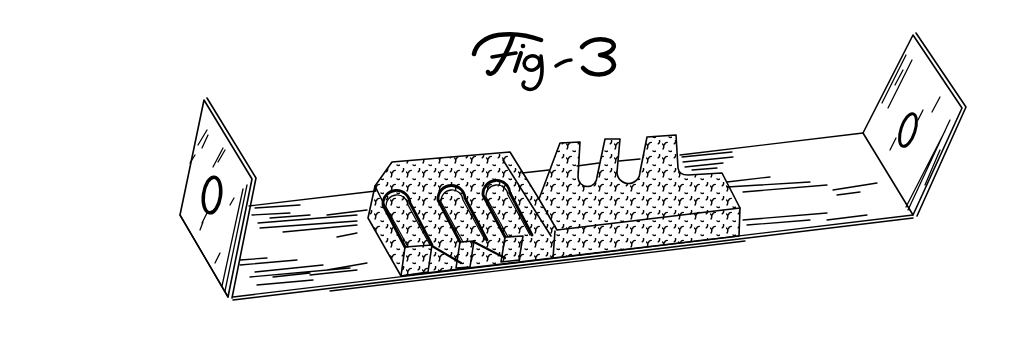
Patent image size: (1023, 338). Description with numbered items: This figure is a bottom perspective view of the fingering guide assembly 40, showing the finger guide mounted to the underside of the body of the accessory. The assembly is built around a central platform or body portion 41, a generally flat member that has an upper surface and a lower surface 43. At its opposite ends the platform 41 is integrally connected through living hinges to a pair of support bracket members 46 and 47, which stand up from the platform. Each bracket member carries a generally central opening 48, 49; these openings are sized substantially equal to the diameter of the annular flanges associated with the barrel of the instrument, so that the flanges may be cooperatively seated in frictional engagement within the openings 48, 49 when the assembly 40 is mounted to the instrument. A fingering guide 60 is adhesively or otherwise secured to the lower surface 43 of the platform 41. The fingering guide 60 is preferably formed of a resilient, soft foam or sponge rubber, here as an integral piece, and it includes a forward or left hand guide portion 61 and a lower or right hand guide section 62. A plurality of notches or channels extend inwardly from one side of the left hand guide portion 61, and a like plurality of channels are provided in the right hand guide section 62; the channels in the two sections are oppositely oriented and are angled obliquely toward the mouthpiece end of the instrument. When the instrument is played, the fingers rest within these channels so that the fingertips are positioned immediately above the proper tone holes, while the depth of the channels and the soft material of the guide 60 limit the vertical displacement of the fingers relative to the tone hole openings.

The fingering guide assembly 40 is at (290, 197).
The central platform 41 is at (829, 233).
The lower surface 43 is at (862, 209).
The support bracket member 46 is at (958, 117).
The support bracket member 47 is at (199, 142).
The central opening 48 is at (915, 137).
The central opening 49 is at (203, 194).
The fingering guide 60 is at (627, 241).
The left hand guide portion 61 is at (688, 231).
The right hand guide section 62 is at (422, 159).